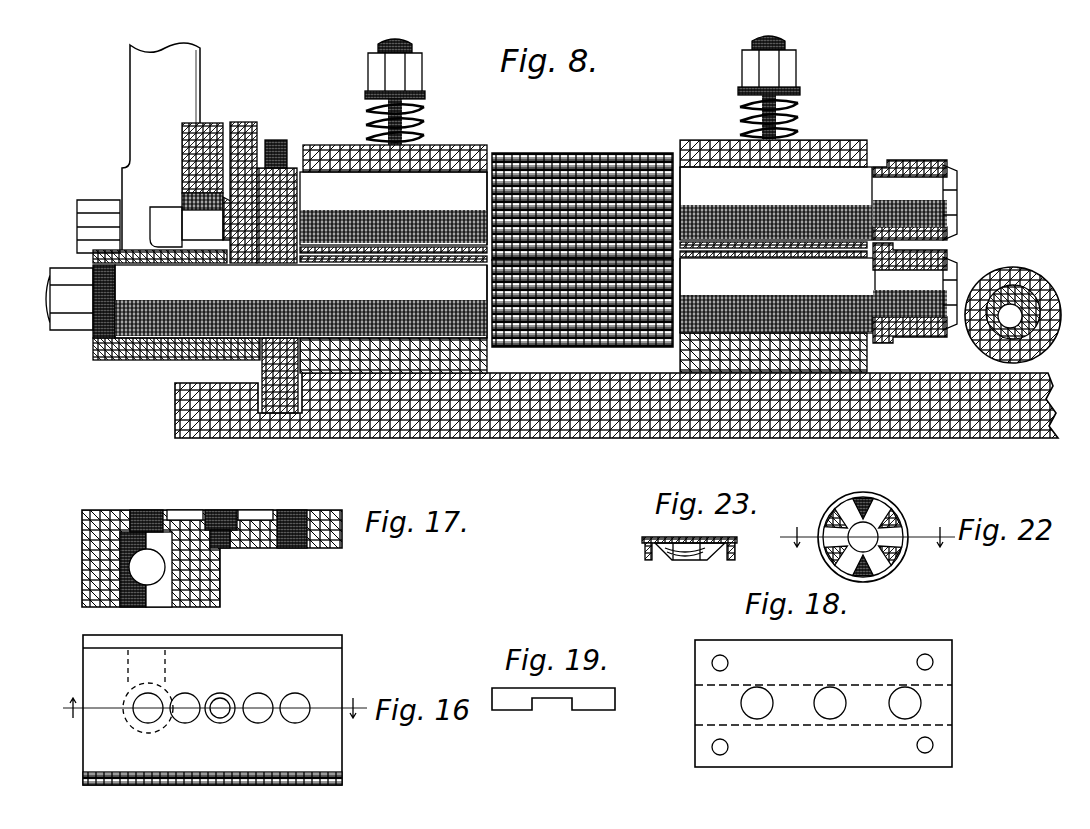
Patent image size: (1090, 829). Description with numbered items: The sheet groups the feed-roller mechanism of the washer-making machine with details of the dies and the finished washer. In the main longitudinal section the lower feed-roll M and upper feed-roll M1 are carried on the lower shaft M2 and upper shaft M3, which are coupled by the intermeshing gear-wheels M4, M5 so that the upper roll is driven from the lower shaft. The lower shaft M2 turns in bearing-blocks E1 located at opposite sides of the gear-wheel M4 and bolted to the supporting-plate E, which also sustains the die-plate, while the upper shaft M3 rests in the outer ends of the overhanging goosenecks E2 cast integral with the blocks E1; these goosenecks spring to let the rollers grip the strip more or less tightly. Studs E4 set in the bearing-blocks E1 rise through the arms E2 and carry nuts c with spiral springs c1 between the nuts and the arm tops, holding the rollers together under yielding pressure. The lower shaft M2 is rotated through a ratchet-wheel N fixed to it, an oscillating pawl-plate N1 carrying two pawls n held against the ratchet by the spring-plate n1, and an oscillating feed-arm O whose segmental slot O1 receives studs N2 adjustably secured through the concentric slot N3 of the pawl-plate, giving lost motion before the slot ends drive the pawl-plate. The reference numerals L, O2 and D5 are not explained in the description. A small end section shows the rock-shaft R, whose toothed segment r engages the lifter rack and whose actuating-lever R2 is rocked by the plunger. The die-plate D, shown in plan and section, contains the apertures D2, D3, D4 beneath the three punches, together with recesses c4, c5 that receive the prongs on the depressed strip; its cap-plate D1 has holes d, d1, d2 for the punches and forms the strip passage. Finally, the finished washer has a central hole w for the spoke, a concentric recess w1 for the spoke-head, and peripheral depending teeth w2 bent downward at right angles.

In FIG. 8, the base plate L is at (1005, 410).
In FIG. 8, the ratchet-wheel N is at (283, 402).
In FIG. 8, the oscillating pawl-plate N1 is at (275, 110).
In FIG. 8, the studs N2 is at (218, 218).
In FIG. 8, the concentric slot N3 is at (235, 197).
In FIG. 8, the pawls n is at (275, 186).
In FIG. 8, the spring-plate n1 is at (275, 144).
In FIG. 8, the oscillating feed-arm O is at (205, 130).
In FIG. 8, the segmental slot O1 is at (186, 215).
In FIG. 8, the post O2 is at (161, 146).
In FIG. 8, the supporting-plate E is at (815, 150).
In FIG. 8, the bearing-blocks E1 is at (487, 360).
In FIG. 8, the overhanging arms or goosenecks E2 is at (425, 158).
In FIG. 8, the studs E4 is at (405, 38).
In FIG. 8, the nuts c is at (405, 70).
In FIG. 8, the spiral springs c1 is at (412, 122).
In FIG. 8, the lower feed-roll M is at (905, 340).
In FIG. 8, the upper feed-roll M1 is at (928, 162).
In FIG. 8, the lower shaft M2 is at (777, 295).
In FIG. 8, the upper shaft M3 is at (776, 203).
In FIG. 8, the gear-wheel M4 is at (565, 349).
In FIG. 8, the gear-wheel M5 is at (603, 163).
In FIG. 8, the rock-shaft R is at (1035, 302).
In FIG. 8, the actuating-lever R2 is at (1012, 298).
In FIG. 8, the toothed segment r is at (1028, 325).
In FIG. 17, the die-plate D is at (215, 570).
In FIG. 16, the die-plate D is at (215, 710).
In FIG. 19, the die-plate D is at (553, 687).
In FIG. 18, the cap-plate D1 is at (945, 660).
In FIG. 17, the aperture D2 is at (143, 510).
In FIG. 16, the aperture D2 is at (148, 718).
In FIG. 17, the opening D3 is at (222, 510).
In FIG. 16, the opening D3 is at (220, 718).
In FIG. 17, the aperture D4 is at (292, 510).
In FIG. 16, the aperture D4 is at (295, 718).
In FIG. 17, the recess D5 is at (150, 597).
In FIG. 17, the recess c4 is at (190, 505).
In FIG. 16, the recess c4 is at (190, 700).
In FIG. 17, the recess c5 is at (262, 505).
In FIG. 16, the recess c5 is at (260, 700).
In FIG. 18, the hole d is at (754, 702).
In FIG. 18, the hole d1 is at (828, 700).
In FIG. 18, the hole d2 is at (900, 700).
In FIG. 23, the central hole w is at (728, 540).
In FIG. 22, the central hole w is at (855, 492).
In FIG. 23, the central recess w1 is at (683, 530).
In FIG. 22, the central recess w1 is at (900, 552).
In FIG. 23, the points, teeth, or spurs w2 is at (648, 556).